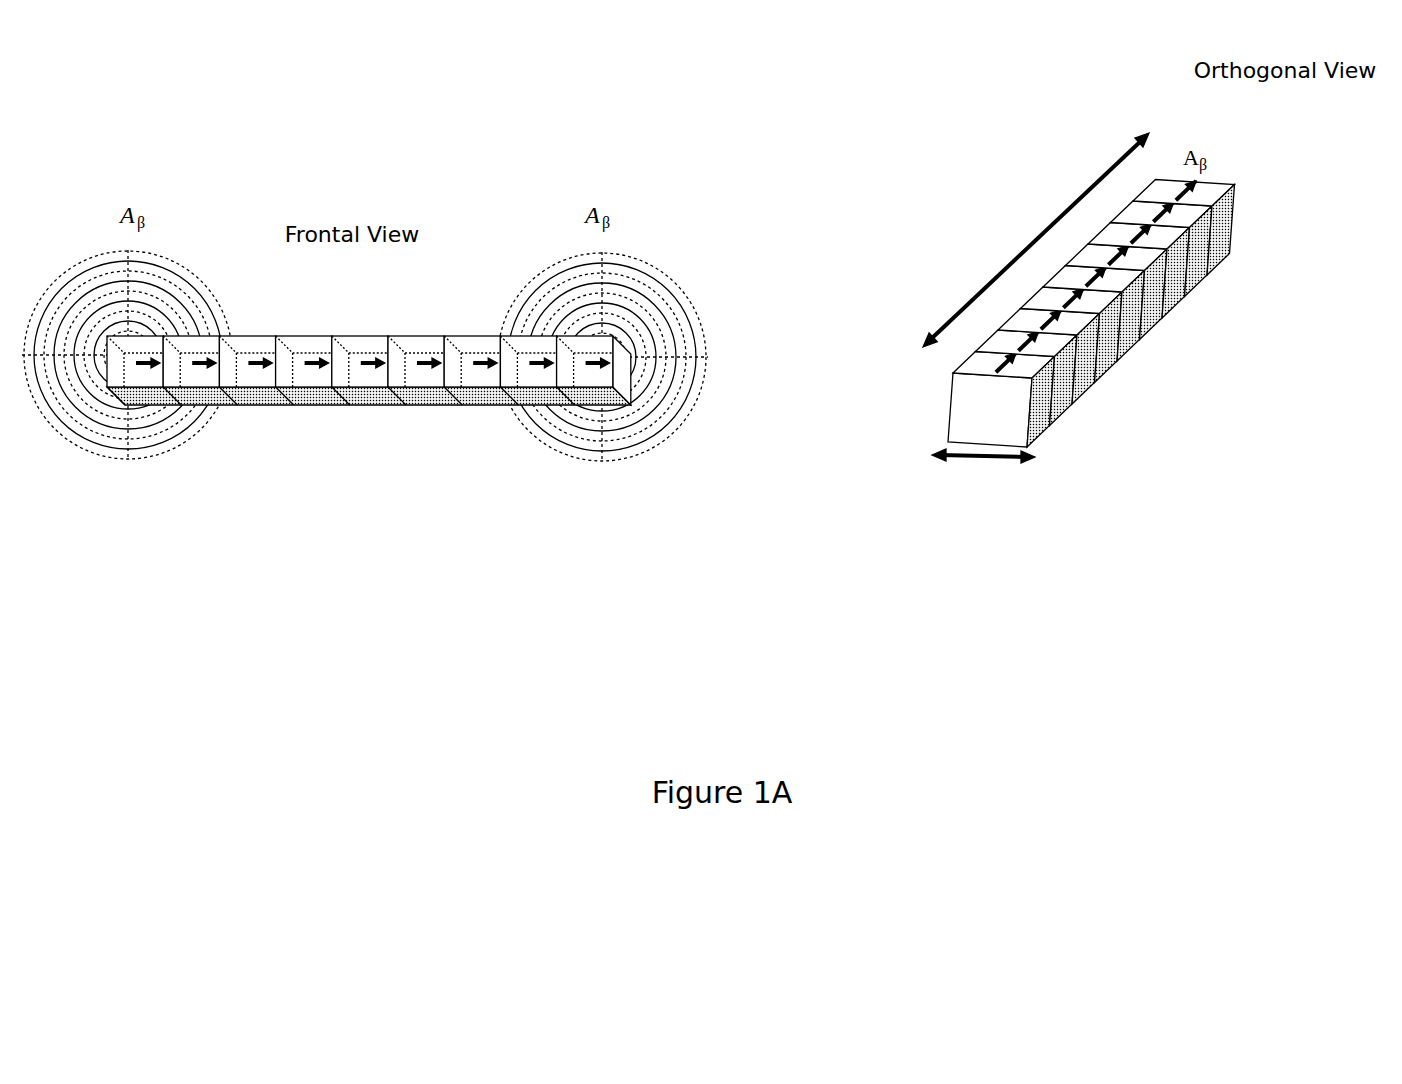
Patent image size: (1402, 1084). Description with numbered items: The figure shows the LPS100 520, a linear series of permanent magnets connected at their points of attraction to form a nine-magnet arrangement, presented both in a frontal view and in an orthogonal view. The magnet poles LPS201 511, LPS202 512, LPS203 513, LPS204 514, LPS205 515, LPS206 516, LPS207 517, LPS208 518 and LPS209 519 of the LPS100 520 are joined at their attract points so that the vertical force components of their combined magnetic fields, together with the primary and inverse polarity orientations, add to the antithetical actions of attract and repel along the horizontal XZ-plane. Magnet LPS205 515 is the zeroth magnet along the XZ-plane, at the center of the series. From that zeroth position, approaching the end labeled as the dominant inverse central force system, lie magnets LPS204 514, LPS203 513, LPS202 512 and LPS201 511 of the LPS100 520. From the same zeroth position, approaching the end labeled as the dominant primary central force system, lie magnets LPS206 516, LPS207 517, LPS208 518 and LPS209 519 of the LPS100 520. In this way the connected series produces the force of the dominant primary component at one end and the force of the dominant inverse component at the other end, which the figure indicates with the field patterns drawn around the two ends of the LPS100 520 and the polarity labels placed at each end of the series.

The magnet LPS201 511 is at (590, 393).
The magnet LPS202 512 is at (533, 393).
The magnet LPS203 513 is at (480, 390).
The magnet LPS204 514 is at (427, 388).
The magnet LPS205 515 is at (368, 396).
The magnet LPS206 516 is at (310, 390).
The magnet LPS207 517 is at (255, 388).
The magnet LPS208 518 is at (203, 396).
The magnet LPS209 519 is at (140, 391).
The LPS100 520 is at (616, 168).